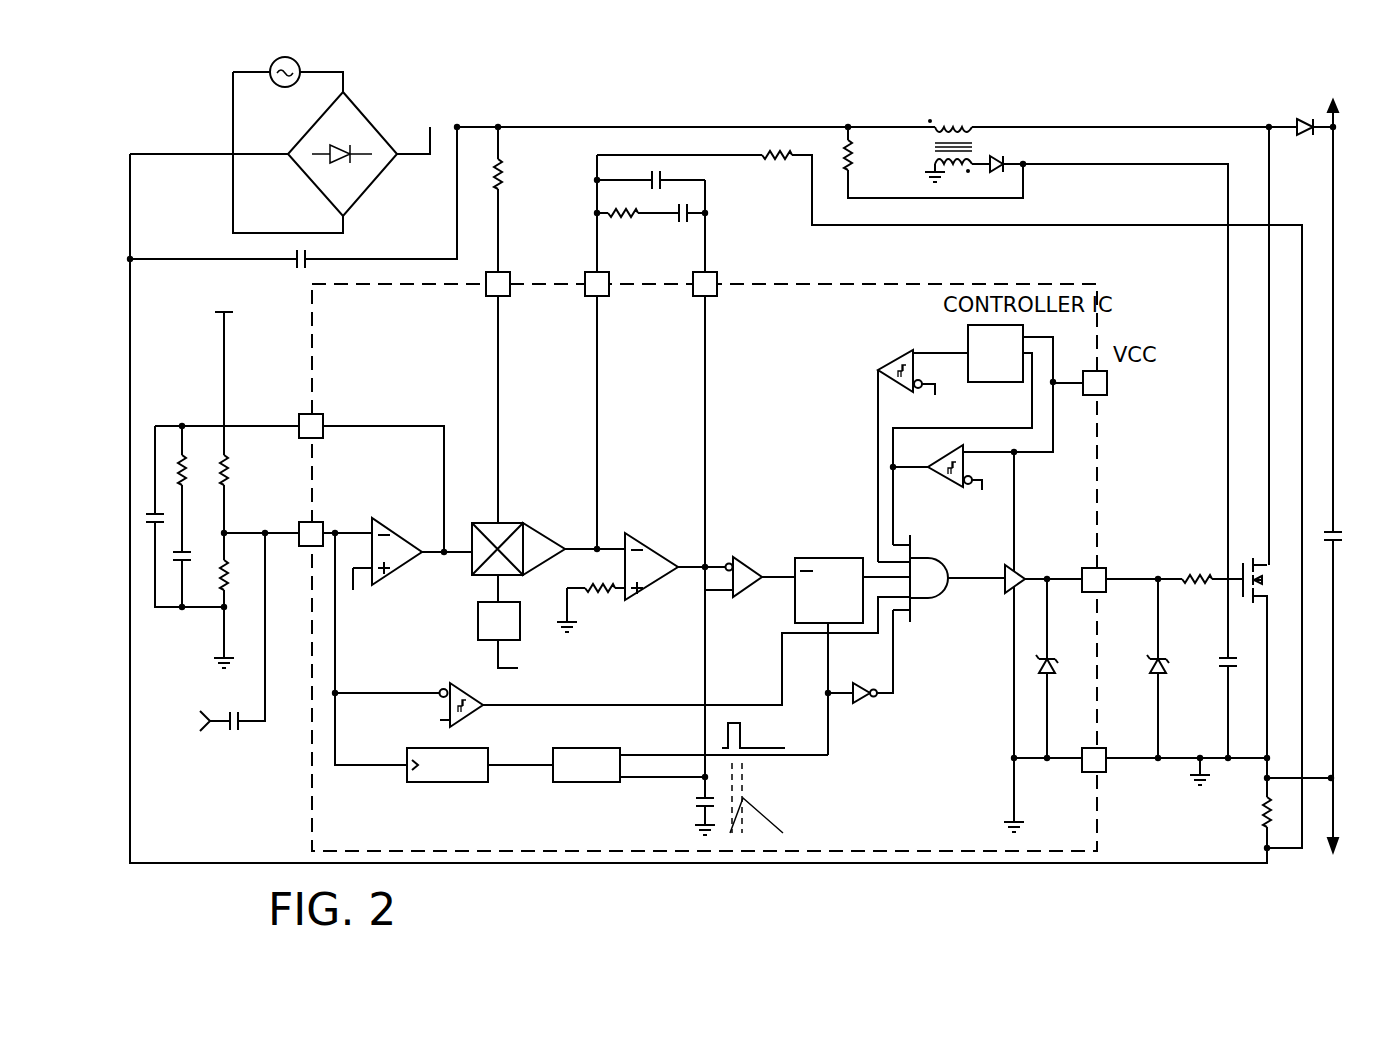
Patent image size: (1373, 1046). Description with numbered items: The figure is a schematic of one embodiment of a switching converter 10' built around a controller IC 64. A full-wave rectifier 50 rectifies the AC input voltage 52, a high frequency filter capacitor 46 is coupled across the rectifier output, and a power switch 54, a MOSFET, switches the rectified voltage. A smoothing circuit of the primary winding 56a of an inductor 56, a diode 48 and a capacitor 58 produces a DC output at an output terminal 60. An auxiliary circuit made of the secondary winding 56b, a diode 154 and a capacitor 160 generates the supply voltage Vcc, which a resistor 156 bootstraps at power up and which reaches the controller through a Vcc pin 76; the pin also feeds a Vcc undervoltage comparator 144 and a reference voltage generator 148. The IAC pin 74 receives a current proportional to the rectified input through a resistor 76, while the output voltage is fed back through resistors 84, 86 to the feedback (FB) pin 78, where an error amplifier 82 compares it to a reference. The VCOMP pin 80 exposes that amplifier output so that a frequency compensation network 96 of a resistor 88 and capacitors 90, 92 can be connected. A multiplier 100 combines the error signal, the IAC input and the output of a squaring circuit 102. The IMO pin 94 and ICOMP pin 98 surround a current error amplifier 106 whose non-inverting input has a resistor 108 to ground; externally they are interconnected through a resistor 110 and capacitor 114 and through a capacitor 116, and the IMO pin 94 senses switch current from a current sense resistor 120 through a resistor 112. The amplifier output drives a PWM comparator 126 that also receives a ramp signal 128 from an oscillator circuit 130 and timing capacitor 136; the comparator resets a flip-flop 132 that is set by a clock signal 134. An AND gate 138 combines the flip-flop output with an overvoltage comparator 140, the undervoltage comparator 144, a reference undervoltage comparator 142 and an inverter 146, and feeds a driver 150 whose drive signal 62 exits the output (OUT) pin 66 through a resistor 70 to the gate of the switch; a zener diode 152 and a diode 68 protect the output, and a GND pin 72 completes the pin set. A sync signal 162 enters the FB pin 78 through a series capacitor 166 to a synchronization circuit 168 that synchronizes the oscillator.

The switching converter 10' is at (178, 95).
The AC input voltage 52 is at (290, 90).
The full-wave rectifier 50 is at (366, 122).
The high frequency filter capacitor 46 is at (303, 270).
The Vcc pin / resistor 76 is at (505, 173).
The IAC pin 74 is at (487, 296).
The IMO pin 94 is at (585, 273).
The ICOMP pin 98 is at (693, 296).
The resistor 112 is at (779, 160).
The capacitor 116 is at (678, 168).
The resistor 110 is at (606, 212).
The capacitor 114 is at (700, 212).
The inductor 56 is at (945, 144).
The primary winding 56a is at (951, 122).
The secondary winding 56b is at (948, 174).
The resistor 156 is at (855, 152).
The diode 154 is at (998, 160).
The controller IC 64 is at (981, 284).
The diode 48 is at (1300, 124).
The output terminal 60 is at (1336, 132).
The capacitor 58 is at (1336, 545).
The frequency compensation network 96 is at (178, 388).
The resistor 88 is at (190, 462).
The resistor 84 is at (232, 472).
The resistor 86 is at (232, 582).
The capacitor 92 is at (150, 530).
The capacitor 90 is at (192, 570).
The VCOMP pin 80 is at (323, 432).
The feedback (FB) pin 78 is at (301, 547).
The sync signal 162 is at (175, 737).
The series capacitor 166 is at (240, 737).
The error amplifier 82 is at (380, 516).
The multiplier 100 is at (512, 522).
The squaring circuit 102 is at (478, 636).
The current error amplifier 106 is at (632, 535).
The resistor 108 is at (592, 584).
The PWM comparator 126 is at (758, 560).
The ramp (oscillator) signal 128 is at (708, 627).
The flip-flop 132 is at (818, 558).
The AND gate 138 is at (925, 600).
The inverter 146 is at (868, 704).
The clock signal 134 is at (780, 757).
The reference undervoltage comparator 142 is at (886, 362).
The reference voltage generator 148 is at (968, 330).
The Vcc undervoltage comparator 144 is at (948, 457).
The driver 150 is at (1018, 578).
The output (OUT) pin 66 is at (1100, 594).
The drive signal 62 is at (1140, 578).
The resistor 70 is at (1203, 590).
The zener diode 152 is at (1052, 680).
The diode 68 is at (1148, 665).
The capacitor 160 is at (1216, 665).
The GND pin 72 is at (1097, 774).
The power switch 54 is at (1258, 578).
The current sense resistor 120 is at (1258, 826).
The overvoltage comparator 140 is at (440, 690).
The synchronization circuit 168 is at (407, 770).
The oscillator circuit 130 is at (553, 770).
The timing capacitor 136 is at (697, 801).